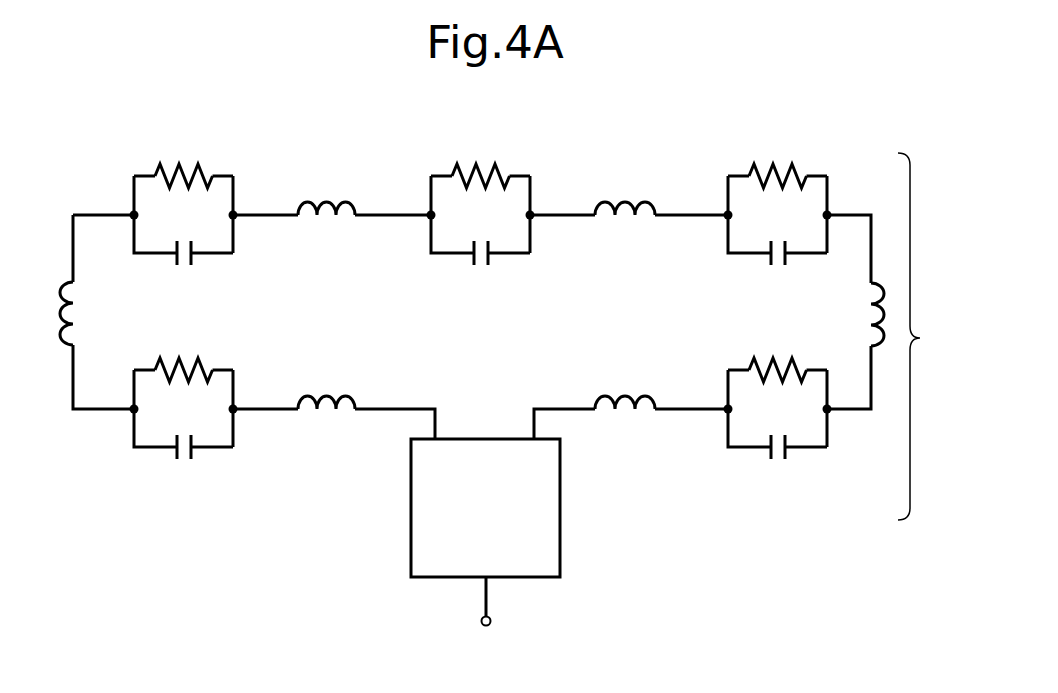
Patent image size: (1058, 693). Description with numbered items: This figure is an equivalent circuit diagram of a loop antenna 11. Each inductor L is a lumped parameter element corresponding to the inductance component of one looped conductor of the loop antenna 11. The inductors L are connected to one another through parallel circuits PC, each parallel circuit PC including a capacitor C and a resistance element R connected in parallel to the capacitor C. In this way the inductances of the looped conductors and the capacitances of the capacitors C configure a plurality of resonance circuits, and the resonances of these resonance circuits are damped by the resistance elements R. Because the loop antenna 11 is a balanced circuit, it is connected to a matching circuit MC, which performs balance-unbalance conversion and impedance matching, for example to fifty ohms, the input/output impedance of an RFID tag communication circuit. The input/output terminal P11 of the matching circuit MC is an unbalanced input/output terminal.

The parallel circuit PC is at (232, 154).
The resistance element R is at (481, 260).
The capacitor C is at (481, 364).
The inductor L is at (473, 289).
The matching circuit MC is at (485, 508).
The input/output terminal P11 is at (485, 616).
The loop antenna 11 is at (930, 336).